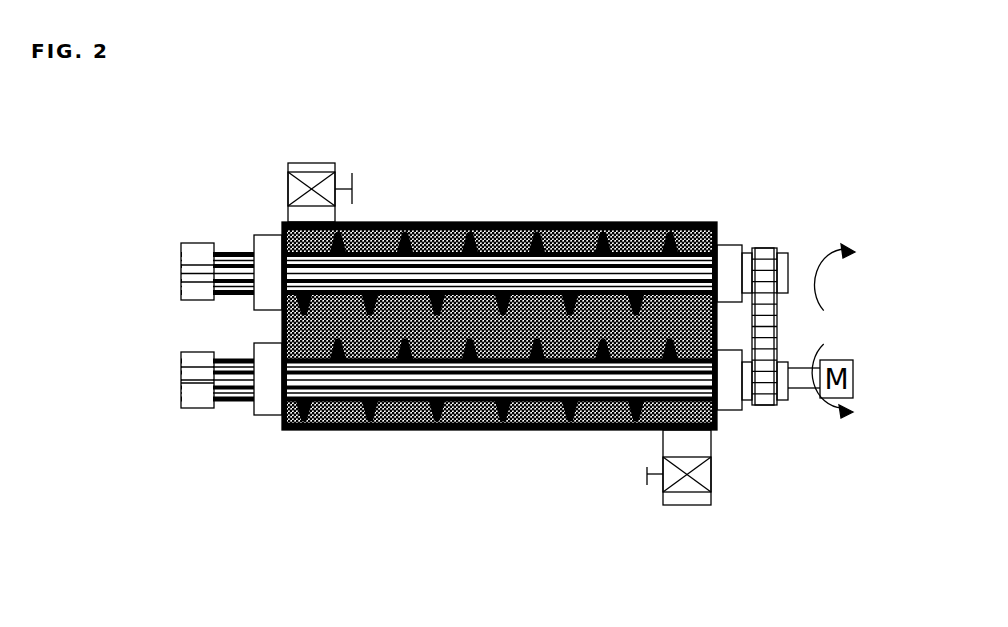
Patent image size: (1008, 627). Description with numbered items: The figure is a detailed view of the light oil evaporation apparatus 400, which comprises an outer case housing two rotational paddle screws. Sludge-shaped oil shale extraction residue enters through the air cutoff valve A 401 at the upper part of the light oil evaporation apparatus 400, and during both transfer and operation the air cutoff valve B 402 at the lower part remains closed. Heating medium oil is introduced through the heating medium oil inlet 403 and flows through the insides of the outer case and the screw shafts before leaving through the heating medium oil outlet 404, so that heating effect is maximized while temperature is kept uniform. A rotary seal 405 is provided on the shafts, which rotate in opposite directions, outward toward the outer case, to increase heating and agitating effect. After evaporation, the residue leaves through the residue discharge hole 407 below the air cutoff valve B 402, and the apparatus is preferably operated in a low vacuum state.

The light oil evaporation apparatus 400 is at (499, 345).
The air cutoff valve A 401 is at (314, 173).
The air cutoff valve B 402 is at (721, 467).
The heating medium oil inlet 403 is at (169, 265).
The heating medium oil outlet 404 is at (769, 198).
The rotary seal 405 is at (181, 282).
The residue discharge hole 407 is at (687, 505).